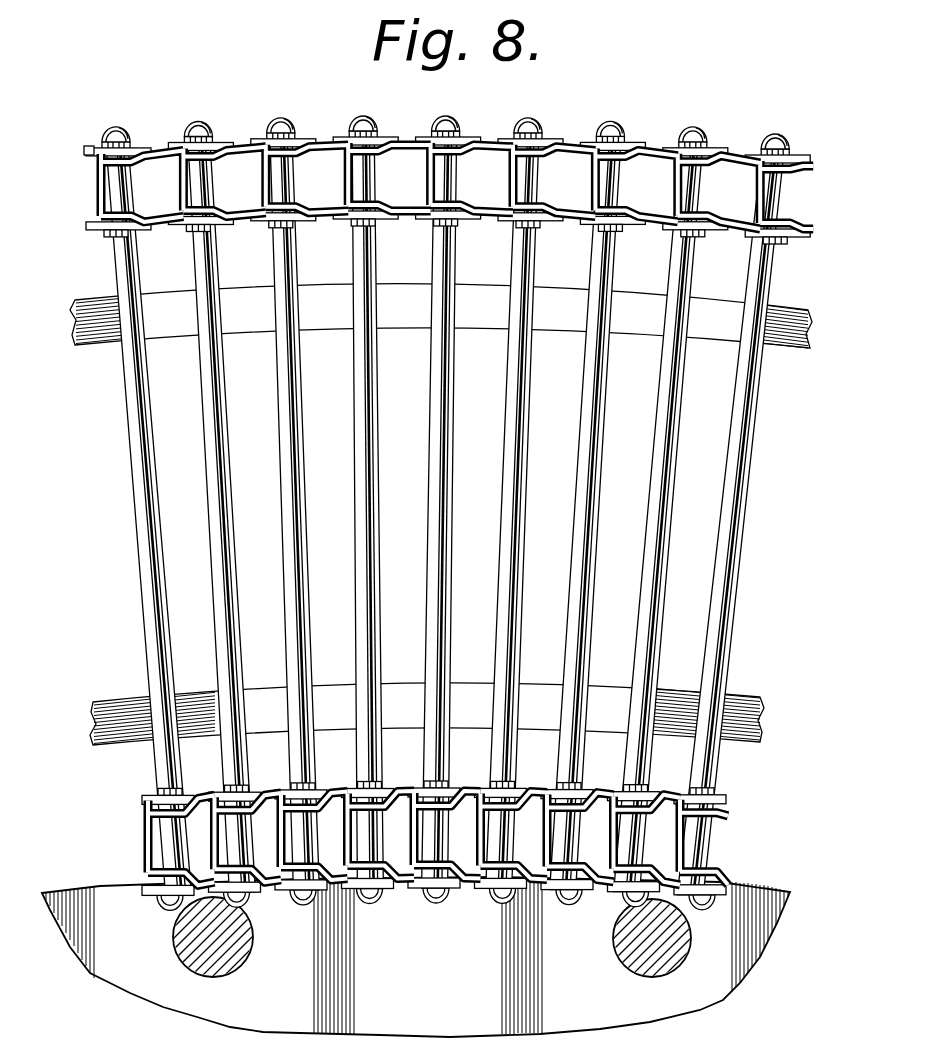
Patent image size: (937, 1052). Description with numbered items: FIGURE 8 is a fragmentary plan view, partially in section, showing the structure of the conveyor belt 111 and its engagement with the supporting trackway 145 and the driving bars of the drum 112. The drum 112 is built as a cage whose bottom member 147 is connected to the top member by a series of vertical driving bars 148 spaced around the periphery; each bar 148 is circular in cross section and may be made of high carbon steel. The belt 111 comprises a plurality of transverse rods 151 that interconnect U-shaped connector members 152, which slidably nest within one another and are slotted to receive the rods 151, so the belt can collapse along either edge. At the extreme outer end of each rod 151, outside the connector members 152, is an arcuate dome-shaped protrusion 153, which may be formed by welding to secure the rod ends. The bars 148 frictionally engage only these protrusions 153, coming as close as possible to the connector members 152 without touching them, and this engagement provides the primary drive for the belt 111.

The belt 111 is at (157, 143).
The drum 112 is at (434, 838).
The cross bar 145 is at (778, 340).
The bottom member 147 is at (217, 1003).
The driving bar 148 is at (240, 945).
The transverse rod 151 is at (147, 535).
The U-shaped connector member 152 is at (327, 223).
The arcuate dome-shaped protrusion 153 is at (440, 117).